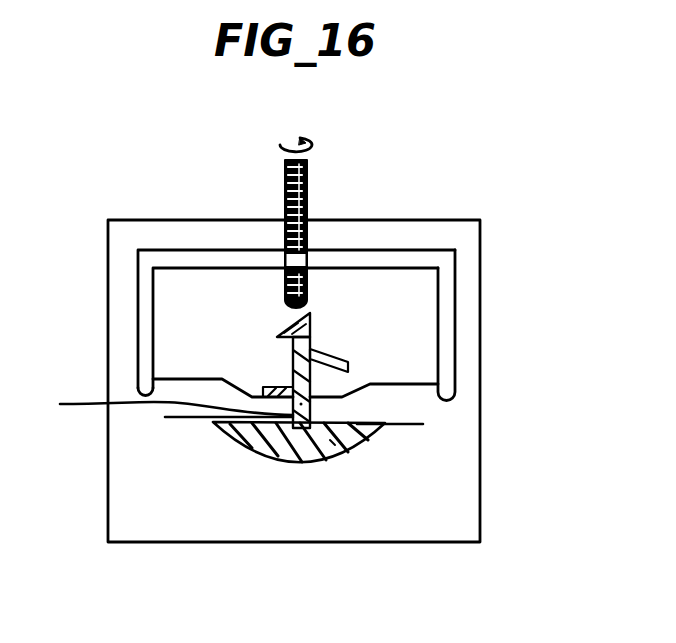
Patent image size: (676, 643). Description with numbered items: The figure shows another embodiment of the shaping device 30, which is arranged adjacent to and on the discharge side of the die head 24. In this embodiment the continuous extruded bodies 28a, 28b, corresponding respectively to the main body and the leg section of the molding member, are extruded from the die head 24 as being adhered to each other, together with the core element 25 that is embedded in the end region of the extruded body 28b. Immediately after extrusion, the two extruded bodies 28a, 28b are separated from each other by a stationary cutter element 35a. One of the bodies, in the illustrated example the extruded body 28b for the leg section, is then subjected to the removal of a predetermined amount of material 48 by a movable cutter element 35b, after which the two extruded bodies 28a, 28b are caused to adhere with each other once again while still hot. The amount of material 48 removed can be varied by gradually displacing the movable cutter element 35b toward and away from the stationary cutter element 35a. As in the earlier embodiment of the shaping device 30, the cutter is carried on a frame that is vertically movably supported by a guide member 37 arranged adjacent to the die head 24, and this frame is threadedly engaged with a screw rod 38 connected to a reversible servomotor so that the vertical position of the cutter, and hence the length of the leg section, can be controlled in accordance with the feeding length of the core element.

The die head 24 is at (108, 477).
The shaping device 30 is at (462, 283).
The guide member 37 is at (147, 296).
The screw rod 38 is at (285, 173).
The extruded body 28b is at (306, 326).
The stationary cutter element 35a is at (405, 385).
The movable cutter element 35b is at (403, 426).
The material 48 is at (155, 409).
The extruded body 28a is at (272, 444).
The core element 25 is at (331, 442).